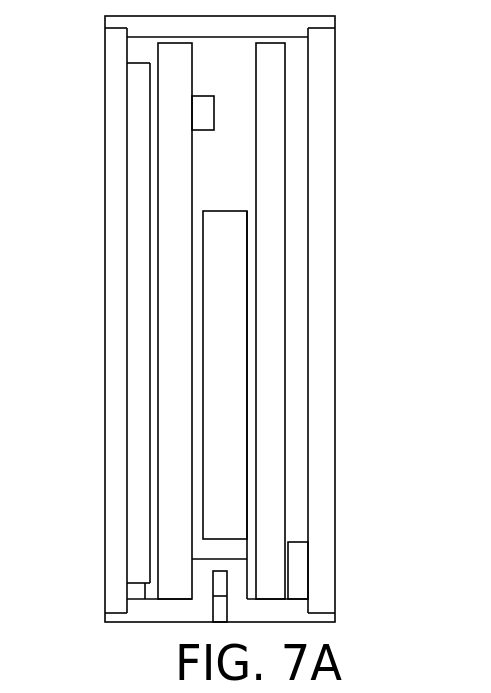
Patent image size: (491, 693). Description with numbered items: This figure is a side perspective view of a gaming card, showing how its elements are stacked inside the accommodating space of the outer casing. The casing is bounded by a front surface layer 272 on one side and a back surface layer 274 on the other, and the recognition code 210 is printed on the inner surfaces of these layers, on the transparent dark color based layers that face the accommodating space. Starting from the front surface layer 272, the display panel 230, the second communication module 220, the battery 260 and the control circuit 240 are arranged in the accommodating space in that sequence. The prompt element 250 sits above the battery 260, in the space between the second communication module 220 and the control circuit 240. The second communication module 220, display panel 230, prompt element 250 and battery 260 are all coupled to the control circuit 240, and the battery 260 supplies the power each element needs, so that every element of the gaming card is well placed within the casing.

The recognition code 210 is at (127, 412).
The second communication module 220 is at (172, 257).
The display panel 230 is at (136, 168).
The control circuit 240 is at (271, 349).
The prompt element 250 is at (207, 110).
The battery 260 is at (225, 312).
The front surface layer 272 is at (117, 567).
The back surface layer 274 is at (322, 567).